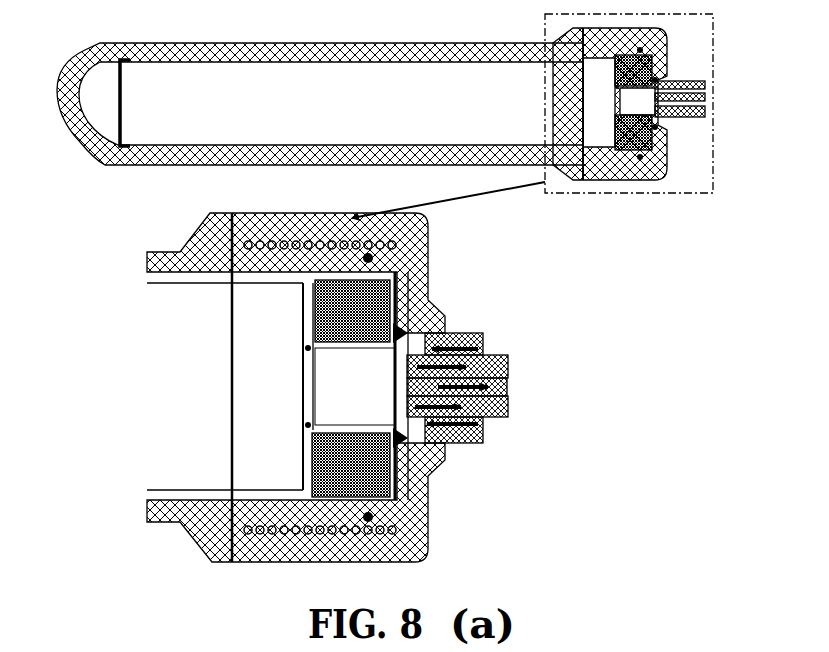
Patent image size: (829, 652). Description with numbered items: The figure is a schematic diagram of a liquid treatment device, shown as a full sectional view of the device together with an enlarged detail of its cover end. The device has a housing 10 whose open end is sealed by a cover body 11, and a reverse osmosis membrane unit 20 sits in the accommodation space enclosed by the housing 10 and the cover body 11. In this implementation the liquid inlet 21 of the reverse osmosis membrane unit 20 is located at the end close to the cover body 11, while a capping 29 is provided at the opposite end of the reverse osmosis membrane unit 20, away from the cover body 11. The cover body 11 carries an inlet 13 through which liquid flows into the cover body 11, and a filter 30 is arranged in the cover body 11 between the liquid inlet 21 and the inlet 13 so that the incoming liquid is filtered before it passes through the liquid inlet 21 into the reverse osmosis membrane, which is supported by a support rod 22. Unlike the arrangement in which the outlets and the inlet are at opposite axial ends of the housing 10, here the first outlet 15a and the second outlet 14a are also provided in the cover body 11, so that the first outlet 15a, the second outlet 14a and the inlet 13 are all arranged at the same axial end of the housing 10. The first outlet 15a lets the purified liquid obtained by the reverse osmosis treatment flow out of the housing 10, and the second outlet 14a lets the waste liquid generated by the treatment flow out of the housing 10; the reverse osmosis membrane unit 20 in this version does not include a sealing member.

The housing 10 is at (287, 44).
The reverse osmosis membrane unit 20 is at (380, 80).
The capping 29 is at (118, 110).
The cover body 11 is at (390, 545).
The filter 30 is at (403, 292).
The liquid inlet 21 is at (305, 463).
The support rod 22 is at (360, 385).
The inlet 13 is at (483, 350).
The second outlet 14a is at (495, 367).
The first outlet 15a is at (505, 387).